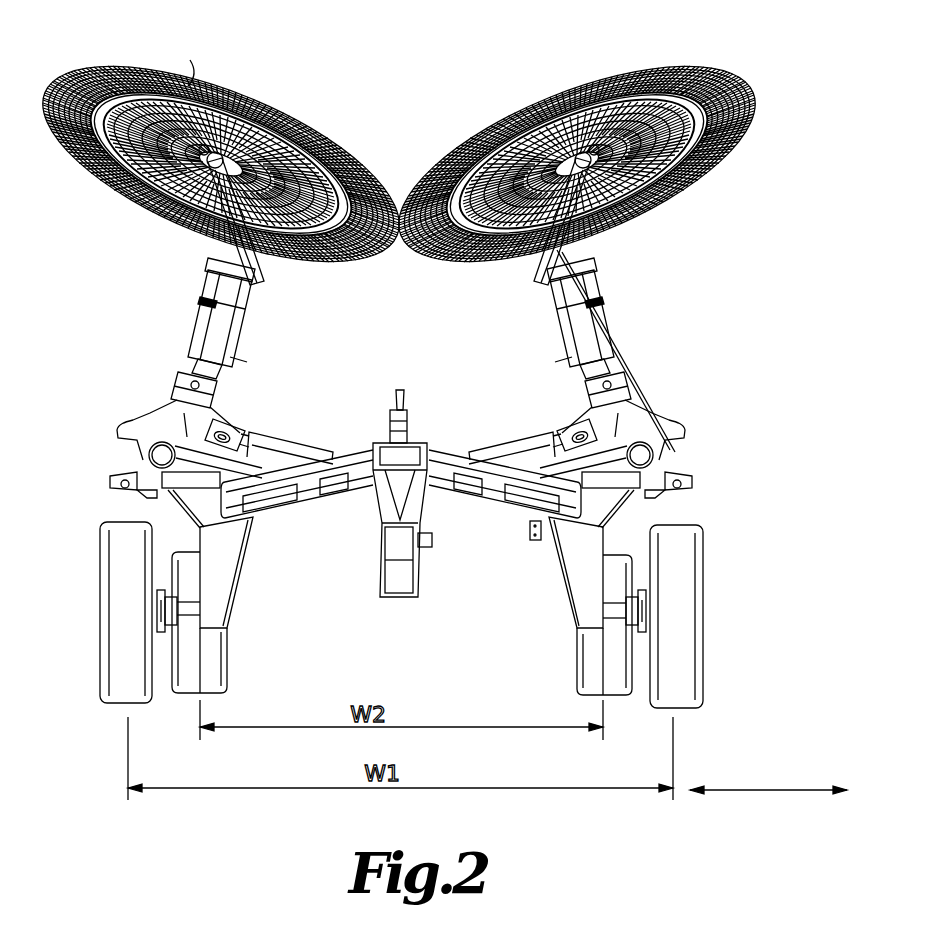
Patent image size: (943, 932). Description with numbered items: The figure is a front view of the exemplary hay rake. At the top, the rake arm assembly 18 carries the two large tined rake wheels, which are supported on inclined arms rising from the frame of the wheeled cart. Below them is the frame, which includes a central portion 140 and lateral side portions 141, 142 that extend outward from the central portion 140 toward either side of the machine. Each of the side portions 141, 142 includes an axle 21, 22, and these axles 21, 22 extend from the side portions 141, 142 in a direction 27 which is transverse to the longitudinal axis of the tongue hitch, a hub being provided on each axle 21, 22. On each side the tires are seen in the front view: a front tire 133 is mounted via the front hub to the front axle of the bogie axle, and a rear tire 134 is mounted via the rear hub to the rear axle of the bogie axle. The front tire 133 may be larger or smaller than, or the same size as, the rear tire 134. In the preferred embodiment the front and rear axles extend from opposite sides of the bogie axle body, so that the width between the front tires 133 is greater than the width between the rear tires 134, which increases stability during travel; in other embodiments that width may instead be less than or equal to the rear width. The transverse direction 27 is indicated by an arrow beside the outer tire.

The rake arm assembly 18 is at (60, 57).
The central portion 140 is at (463, 470).
The side portion 141 is at (230, 572).
The side portion 142 is at (560, 580).
The axle 21 is at (192, 607).
The axle 22 is at (620, 613).
The front tire 133 is at (118, 650).
The rear tire 134 is at (213, 677).
The direction 27 is at (768, 779).